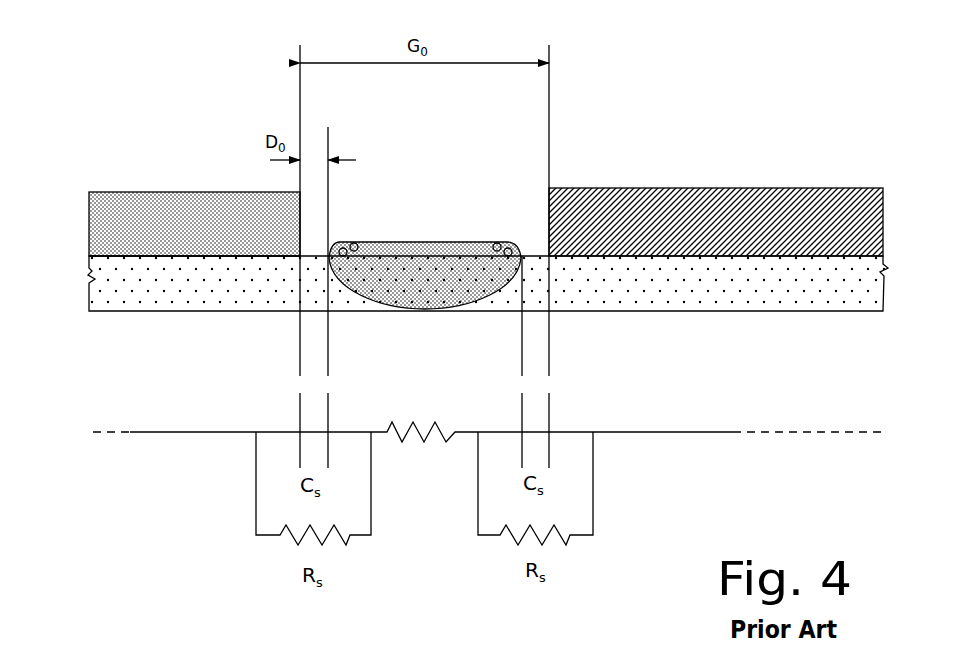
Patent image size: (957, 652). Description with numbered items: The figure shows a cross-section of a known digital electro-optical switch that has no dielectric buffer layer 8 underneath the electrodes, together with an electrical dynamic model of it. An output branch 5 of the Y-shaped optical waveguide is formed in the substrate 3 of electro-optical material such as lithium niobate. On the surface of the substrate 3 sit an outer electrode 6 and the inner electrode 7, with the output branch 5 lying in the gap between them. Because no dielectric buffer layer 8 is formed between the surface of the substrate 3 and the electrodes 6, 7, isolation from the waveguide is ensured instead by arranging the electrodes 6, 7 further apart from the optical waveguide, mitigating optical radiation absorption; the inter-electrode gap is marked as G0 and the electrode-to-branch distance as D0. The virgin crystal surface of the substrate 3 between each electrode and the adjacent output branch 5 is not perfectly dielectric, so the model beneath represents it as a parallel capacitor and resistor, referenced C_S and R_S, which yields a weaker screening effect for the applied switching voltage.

The substrate 3 is at (104, 285).
The output branch 5 is at (401, 268).
The outer electrode 6 is at (167, 215).
The inner electrode 7 is at (702, 200).
The dielectric buffer layer 8 is at (107, 250).